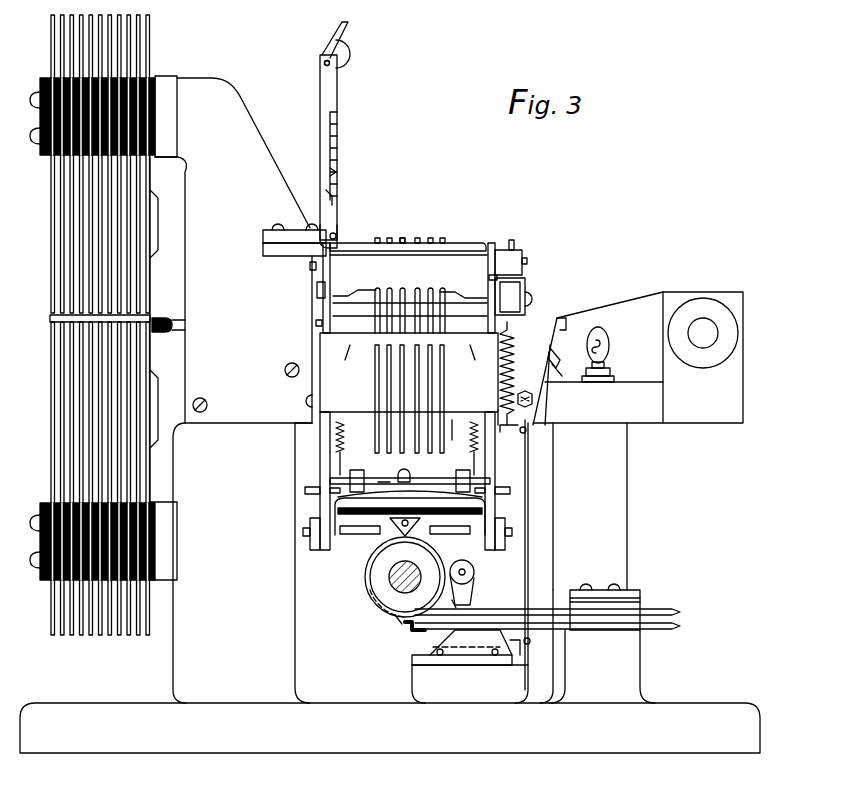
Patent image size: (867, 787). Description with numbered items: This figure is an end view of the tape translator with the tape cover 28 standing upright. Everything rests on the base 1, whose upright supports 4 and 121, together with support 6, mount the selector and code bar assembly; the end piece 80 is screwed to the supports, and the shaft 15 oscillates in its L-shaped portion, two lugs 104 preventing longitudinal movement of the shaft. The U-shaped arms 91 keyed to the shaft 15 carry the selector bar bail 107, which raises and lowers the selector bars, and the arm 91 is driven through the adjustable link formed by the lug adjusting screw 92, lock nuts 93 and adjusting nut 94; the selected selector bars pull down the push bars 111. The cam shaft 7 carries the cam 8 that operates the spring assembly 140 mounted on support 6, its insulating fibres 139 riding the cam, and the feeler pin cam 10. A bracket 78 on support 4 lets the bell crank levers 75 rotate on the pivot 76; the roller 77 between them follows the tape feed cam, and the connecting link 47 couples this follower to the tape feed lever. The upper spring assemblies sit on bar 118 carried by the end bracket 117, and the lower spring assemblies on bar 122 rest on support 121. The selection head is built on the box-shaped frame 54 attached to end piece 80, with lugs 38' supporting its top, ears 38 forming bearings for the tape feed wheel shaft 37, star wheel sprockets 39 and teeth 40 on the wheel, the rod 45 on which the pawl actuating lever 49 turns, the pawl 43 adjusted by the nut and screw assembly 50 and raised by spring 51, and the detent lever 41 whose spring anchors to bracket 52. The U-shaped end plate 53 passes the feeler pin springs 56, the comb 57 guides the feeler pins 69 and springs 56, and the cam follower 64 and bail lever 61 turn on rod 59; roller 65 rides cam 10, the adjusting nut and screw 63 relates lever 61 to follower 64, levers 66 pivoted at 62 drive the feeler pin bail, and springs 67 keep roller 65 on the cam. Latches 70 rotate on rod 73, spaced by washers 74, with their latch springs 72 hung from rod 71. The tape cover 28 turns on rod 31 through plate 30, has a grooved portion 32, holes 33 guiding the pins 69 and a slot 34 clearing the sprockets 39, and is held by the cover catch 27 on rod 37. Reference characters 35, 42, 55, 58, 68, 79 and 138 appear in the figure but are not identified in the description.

The base 1 is at (104, 708).
The upright support 4 is at (625, 490).
The support 6 is at (640, 666).
The cam shaft 7 is at (392, 592).
The cam 8 is at (398, 615).
The feeler pin cam 10 is at (367, 590).
The shaft 15 is at (712, 330).
The cover catch 27 is at (340, 30).
The tape cover 28 is at (337, 93).
The plate 30 is at (265, 234).
The rod 31 is at (340, 232).
The grooved portion 32 is at (326, 192).
The holes 33 is at (338, 178).
The slot 34 is at (338, 158).
The pin 35 is at (323, 65).
The shaft 37 is at (310, 264).
The ears 38 is at (520, 254).
The lugs 38' is at (387, 282).
The star wheel sprockets 39 is at (402, 238).
The teeth 40 is at (512, 240).
The detent lever 41 is at (520, 283).
The knob 42 is at (529, 297).
The pawl 43 is at (512, 362).
The rod 45 is at (568, 324).
The connecting link 47 is at (530, 475).
The pawl actuating lever 49 is at (552, 322).
The adjusting nut and screw assembly 50 is at (533, 400).
The spring 51 is at (528, 434).
The bracket 52 is at (502, 362).
The U-shaped end plate 53 is at (318, 400).
The box shaped frame 54 is at (323, 305).
The bar 55 is at (263, 250).
The feeler pin springs 56 is at (390, 370).
The comb 57 is at (454, 420).
The bracket 58 is at (315, 550).
The rod 59 is at (342, 534).
The bail lever 61 is at (422, 490).
The pivot 62 is at (382, 482).
The adjusting nut and screw 63 is at (403, 476).
The cam follower 64 is at (366, 512).
The roller 65 is at (420, 536).
The levers 66 is at (362, 418).
The springs 67 is at (336, 436).
The screw 68 is at (305, 490).
The feeler pins 69 is at (389, 238).
The latches 70 is at (380, 305).
The rod 71 is at (458, 290).
The latch springs 72 is at (390, 288).
The rod 73 is at (316, 323).
The spacing washers 74 is at (407, 350).
The bell crank levers 75 is at (516, 650).
The pivot 76 is at (458, 640).
The roller 77 is at (474, 572).
The bracket 78 is at (430, 650).
The pin 79 is at (530, 644).
The end piece 80 is at (655, 420).
The U-shaped arms 91 is at (639, 308).
The lug adjusting screw 92 is at (607, 342).
The lock nuts 93 is at (610, 371).
The adjusting nut 94 is at (608, 380).
The lugs 104 is at (728, 347).
The selector bar bail 107 is at (560, 366).
The push bars 111 is at (172, 318).
The end bracket 117 is at (214, 90).
The bar 118 is at (165, 80).
The upright support 121 is at (243, 432).
The bar 122 is at (168, 533).
The plate 138 is at (50, 320).
The insulating fibres 139 is at (408, 630).
The spring assembly 140 is at (680, 627).